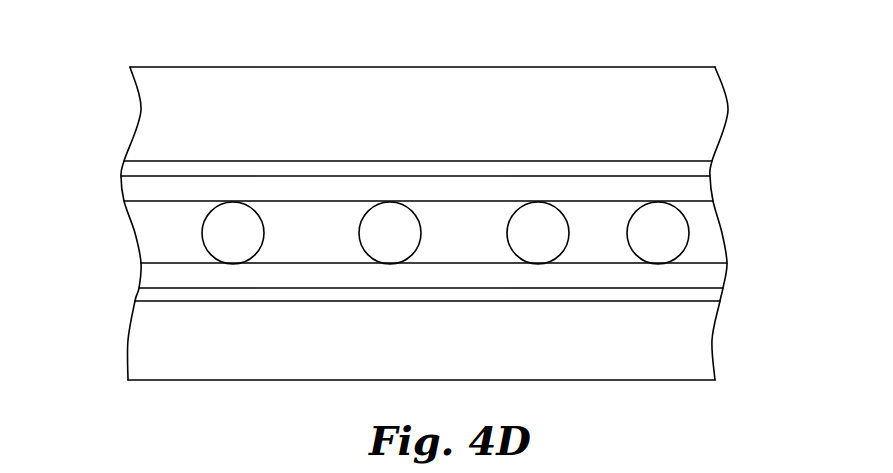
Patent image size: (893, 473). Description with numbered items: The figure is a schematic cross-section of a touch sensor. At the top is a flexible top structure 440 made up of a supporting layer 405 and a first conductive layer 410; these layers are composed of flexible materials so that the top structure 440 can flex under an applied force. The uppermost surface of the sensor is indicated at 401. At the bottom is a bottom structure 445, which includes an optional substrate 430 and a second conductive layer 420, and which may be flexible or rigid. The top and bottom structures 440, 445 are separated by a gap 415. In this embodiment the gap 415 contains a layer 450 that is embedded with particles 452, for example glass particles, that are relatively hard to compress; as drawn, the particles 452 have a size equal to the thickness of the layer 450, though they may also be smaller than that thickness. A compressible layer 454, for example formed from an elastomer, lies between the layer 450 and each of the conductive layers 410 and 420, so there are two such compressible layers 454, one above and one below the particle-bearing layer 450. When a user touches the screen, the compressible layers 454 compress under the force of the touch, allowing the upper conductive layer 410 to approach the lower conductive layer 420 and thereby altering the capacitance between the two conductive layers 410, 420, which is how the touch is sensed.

The top surface 401 is at (578, 66).
The supporting layer 405 is at (683, 80).
The first conductive layer 410 is at (704, 170).
The gap 415 is at (116, 180).
The second conductive layer 420 is at (715, 297).
The substrate 430 is at (703, 366).
The top structure 440 is at (116, 68).
The bottom structure 445 is at (116, 298).
The layer 450 is at (705, 222).
The particles 452 is at (677, 240).
The compressible layer 454 is at (703, 192).